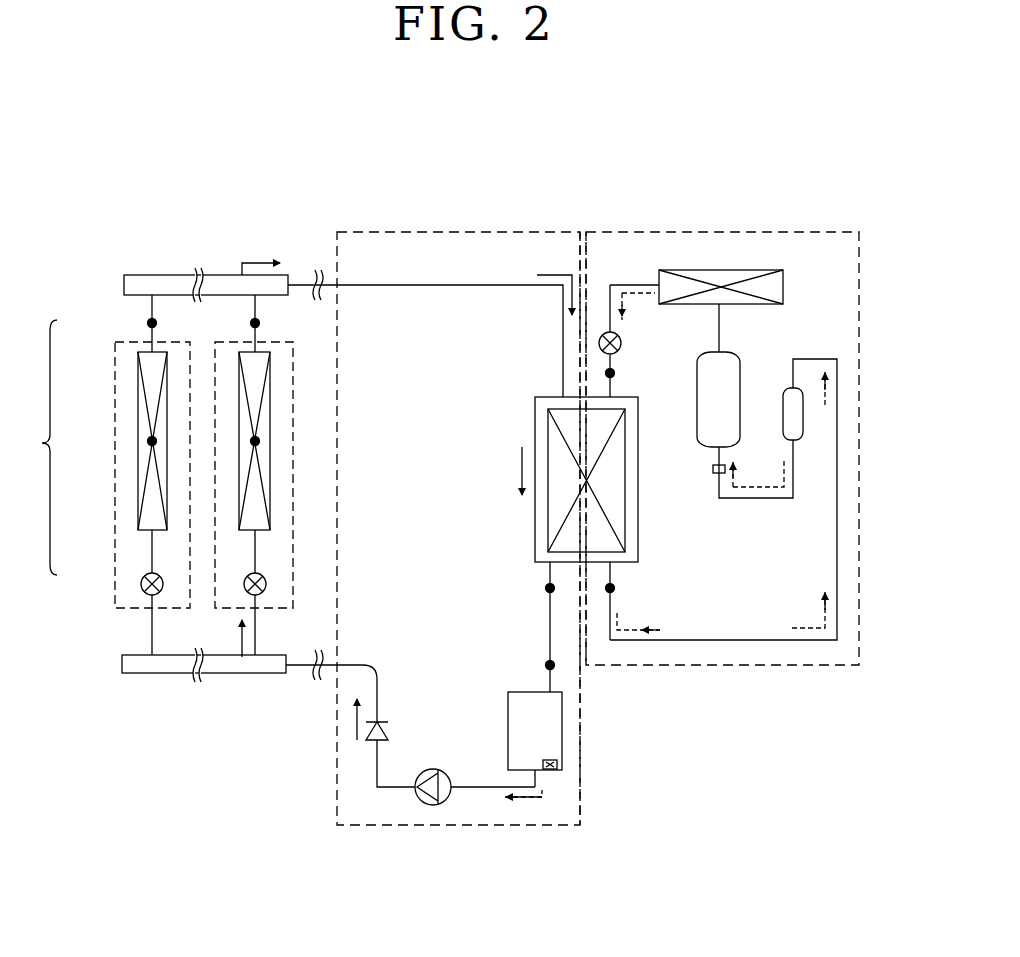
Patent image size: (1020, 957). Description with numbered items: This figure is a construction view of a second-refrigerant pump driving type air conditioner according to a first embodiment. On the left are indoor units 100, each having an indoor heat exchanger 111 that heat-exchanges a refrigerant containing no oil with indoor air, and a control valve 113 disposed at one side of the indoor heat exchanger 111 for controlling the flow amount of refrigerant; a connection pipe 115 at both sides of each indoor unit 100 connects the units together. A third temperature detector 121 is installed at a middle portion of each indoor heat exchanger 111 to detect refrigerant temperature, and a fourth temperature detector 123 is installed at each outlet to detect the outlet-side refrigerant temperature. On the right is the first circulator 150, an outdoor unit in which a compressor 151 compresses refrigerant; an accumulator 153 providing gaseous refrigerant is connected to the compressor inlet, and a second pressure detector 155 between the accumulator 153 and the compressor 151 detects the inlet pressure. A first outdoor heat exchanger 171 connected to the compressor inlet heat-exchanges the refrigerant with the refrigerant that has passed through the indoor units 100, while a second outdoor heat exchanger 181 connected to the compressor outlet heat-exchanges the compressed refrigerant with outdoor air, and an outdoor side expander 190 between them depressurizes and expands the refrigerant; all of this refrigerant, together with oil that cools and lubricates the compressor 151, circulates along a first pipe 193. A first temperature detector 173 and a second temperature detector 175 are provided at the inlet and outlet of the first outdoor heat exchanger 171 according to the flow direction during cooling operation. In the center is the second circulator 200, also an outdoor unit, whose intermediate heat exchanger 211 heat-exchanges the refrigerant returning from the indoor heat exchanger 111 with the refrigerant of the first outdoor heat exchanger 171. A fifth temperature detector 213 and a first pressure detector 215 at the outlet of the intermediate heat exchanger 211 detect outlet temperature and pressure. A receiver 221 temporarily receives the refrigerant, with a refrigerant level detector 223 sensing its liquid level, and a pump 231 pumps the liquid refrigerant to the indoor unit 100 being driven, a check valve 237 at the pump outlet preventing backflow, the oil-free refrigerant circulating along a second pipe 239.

The indoor unit 100 is at (10, 454).
The indoor heat exchanger 111 is at (255, 403).
The control valve 113 is at (247, 578).
The connection pipe 115 is at (146, 275).
The third temperature detector 121 is at (252, 441).
The fourth temperature detector 123 is at (252, 324).
The first circulator 150 is at (737, 222).
The compressor 151 is at (735, 362).
The accumulator 153 is at (800, 417).
The second pressure detector 155 is at (725, 470).
The first outdoor heat exchanger 171 is at (617, 503).
The first temperature detector 173 is at (606, 371).
The second temperature detector 175 is at (610, 592).
The second outdoor heat exchanger 181 is at (685, 270).
The outdoor side expander 190 is at (604, 332).
The first pipe 193 is at (838, 555).
The second circulator 200 is at (428, 222).
The intermediate heat exchanger 211 is at (533, 400).
The fifth temperature detector 213 is at (553, 591).
The first pressure detector 215 is at (553, 668).
The receiver 221 is at (510, 745).
The refrigerant level detector 223 is at (560, 765).
The pump 231 is at (445, 805).
The check valve 237 is at (372, 738).
The second pipe 239 is at (370, 285).